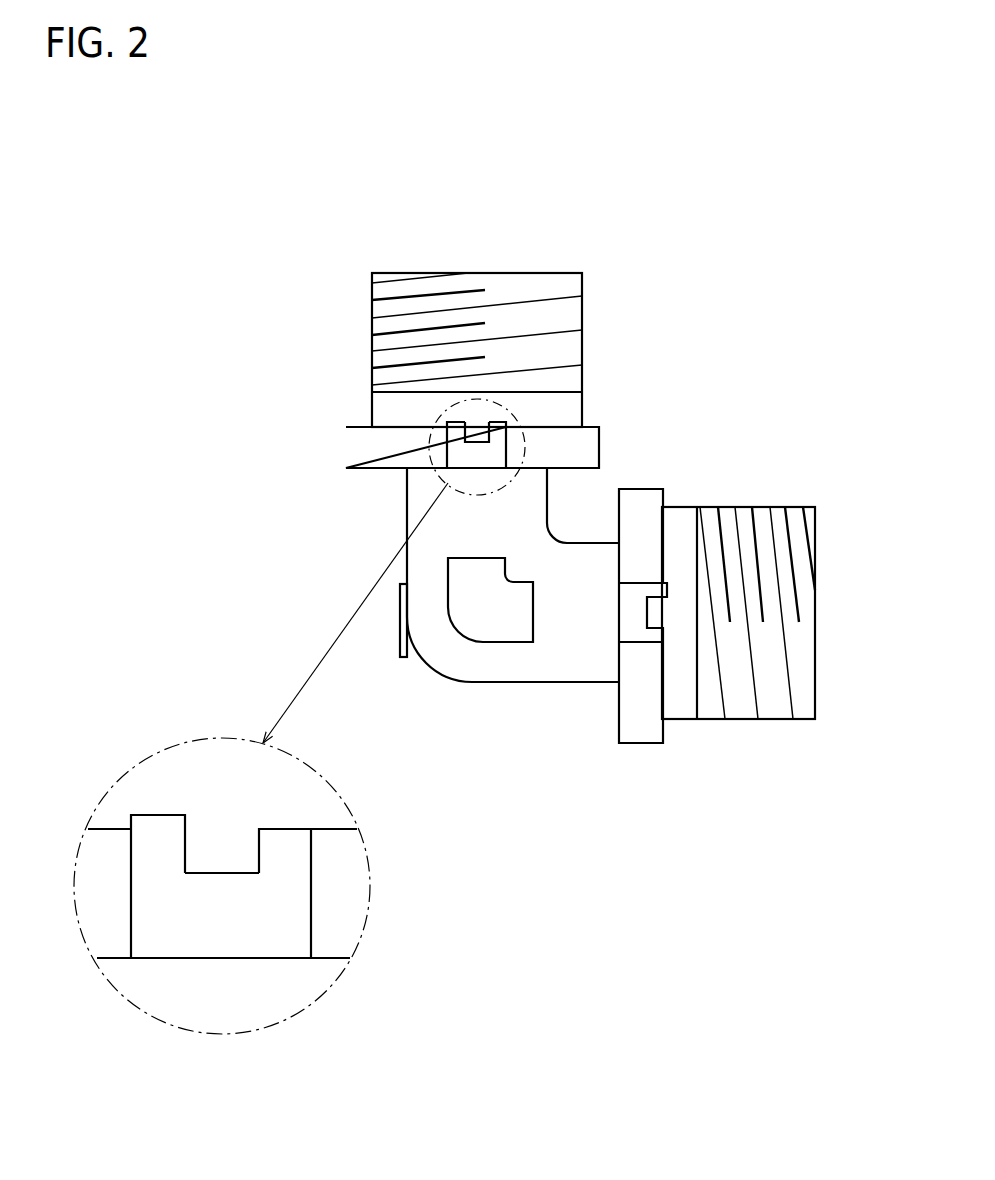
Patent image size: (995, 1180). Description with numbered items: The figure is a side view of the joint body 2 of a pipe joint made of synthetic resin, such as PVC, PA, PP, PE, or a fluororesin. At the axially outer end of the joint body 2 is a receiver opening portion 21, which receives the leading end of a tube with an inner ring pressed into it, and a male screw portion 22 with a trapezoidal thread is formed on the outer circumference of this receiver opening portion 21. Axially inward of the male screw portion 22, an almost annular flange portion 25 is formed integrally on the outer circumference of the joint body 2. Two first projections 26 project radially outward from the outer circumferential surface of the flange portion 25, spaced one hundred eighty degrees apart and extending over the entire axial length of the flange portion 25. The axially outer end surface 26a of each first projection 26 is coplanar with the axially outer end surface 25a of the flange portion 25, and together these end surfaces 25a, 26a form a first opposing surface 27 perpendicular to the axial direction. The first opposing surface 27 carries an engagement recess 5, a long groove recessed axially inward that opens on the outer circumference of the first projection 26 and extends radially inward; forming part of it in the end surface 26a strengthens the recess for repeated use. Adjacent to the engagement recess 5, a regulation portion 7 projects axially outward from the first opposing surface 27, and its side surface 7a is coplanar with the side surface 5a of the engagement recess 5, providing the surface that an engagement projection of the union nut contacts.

The joint body 2 is at (633, 277).
The engagement recess 5 is at (475, 438).
The side surface of the engagement recess 5a is at (207, 877).
The regulation portion 7 is at (162, 813).
The side surface of the regulation portion 7a is at (185, 820).
The receiver opening portion 21 is at (502, 290).
The male screw portion 22 is at (400, 331).
The flange portion 25 is at (600, 445).
The end surface of the flange portion 25a is at (333, 829).
The first projection 26 is at (453, 453).
The end surface of the first projection 26a is at (287, 829).
The first opposing surface 27 is at (558, 425).